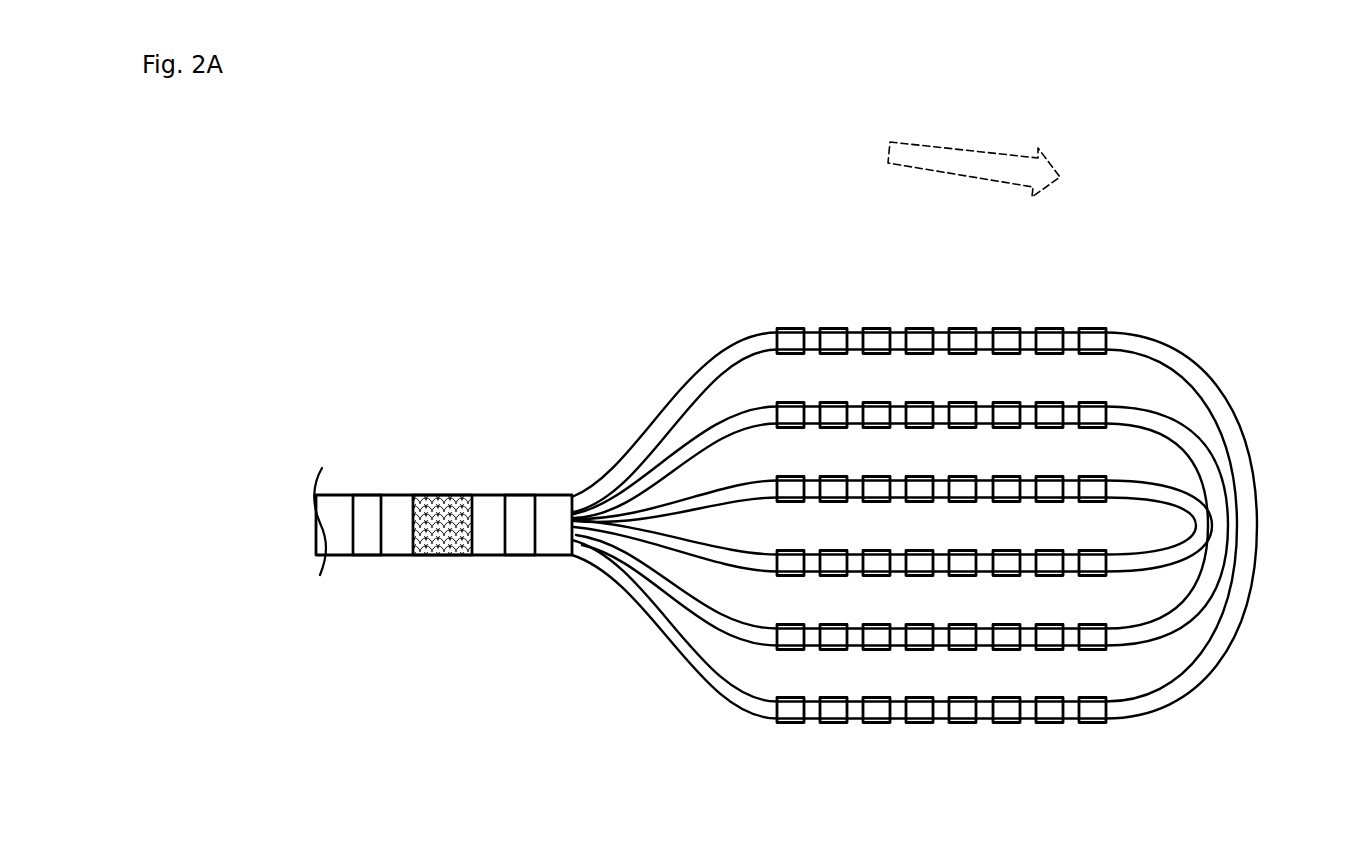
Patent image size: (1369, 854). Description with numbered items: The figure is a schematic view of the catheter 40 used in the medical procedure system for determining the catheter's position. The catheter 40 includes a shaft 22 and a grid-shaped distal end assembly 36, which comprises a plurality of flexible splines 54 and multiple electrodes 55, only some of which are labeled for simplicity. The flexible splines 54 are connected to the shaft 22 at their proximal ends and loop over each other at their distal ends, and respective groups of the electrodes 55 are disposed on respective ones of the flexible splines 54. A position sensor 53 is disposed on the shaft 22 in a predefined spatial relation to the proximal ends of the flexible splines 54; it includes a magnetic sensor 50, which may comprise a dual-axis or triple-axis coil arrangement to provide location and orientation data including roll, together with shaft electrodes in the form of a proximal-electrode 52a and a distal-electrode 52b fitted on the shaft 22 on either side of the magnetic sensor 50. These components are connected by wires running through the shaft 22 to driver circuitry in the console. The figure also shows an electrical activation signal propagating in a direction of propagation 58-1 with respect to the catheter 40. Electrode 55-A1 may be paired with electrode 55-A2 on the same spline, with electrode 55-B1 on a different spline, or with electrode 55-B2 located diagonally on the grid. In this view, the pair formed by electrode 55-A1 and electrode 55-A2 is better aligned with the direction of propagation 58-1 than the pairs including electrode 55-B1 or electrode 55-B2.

The shaft 22 is at (327, 467).
The distal end assembly 36 is at (1233, 677).
The catheter 40 is at (436, 219).
The magnetic sensor 50 is at (450, 557).
The proximal-electrode 52a is at (367, 557).
The distal-electrode 52b is at (522, 557).
The position sensor 53 is at (537, 481).
The flexible splines 54 is at (1153, 328).
The electrodes 55 is at (866, 328).
The electrode 55-A1 is at (787, 328).
The electrode 55-A2 is at (834, 328).
The electrode 55-B1 is at (787, 402).
The electrode 55-B2 is at (836, 402).
The direction of propagation 58-1 is at (997, 157).